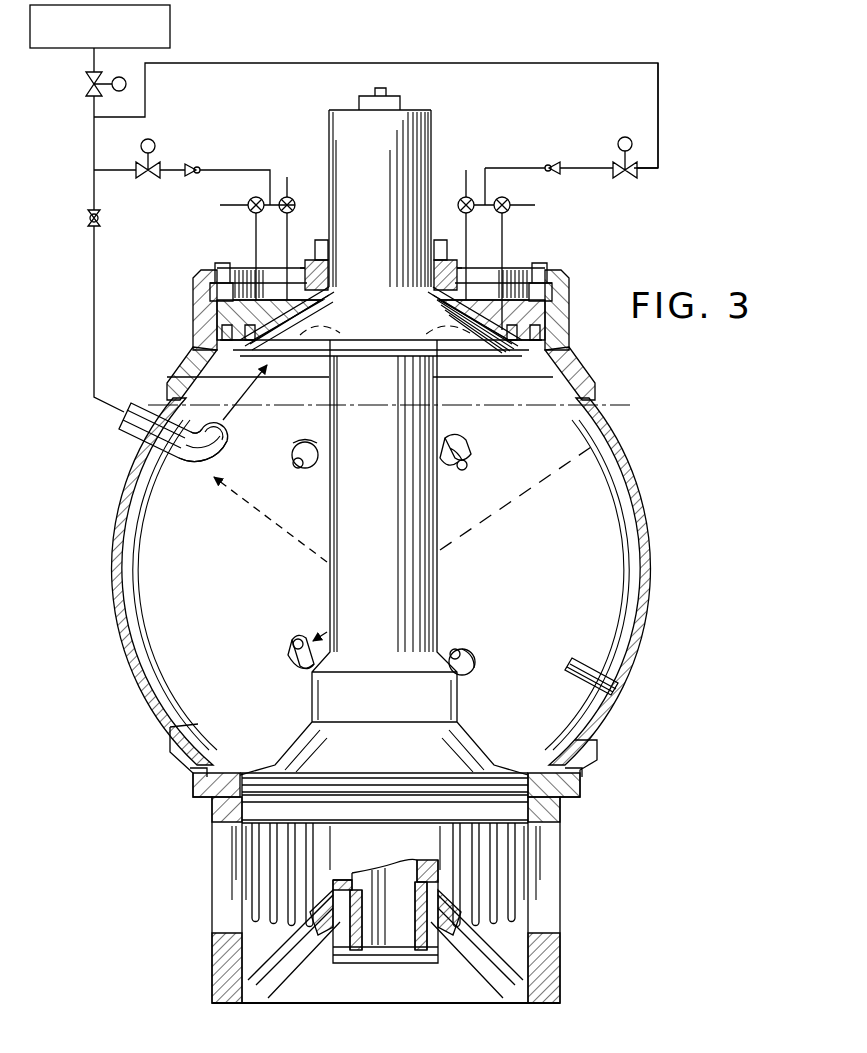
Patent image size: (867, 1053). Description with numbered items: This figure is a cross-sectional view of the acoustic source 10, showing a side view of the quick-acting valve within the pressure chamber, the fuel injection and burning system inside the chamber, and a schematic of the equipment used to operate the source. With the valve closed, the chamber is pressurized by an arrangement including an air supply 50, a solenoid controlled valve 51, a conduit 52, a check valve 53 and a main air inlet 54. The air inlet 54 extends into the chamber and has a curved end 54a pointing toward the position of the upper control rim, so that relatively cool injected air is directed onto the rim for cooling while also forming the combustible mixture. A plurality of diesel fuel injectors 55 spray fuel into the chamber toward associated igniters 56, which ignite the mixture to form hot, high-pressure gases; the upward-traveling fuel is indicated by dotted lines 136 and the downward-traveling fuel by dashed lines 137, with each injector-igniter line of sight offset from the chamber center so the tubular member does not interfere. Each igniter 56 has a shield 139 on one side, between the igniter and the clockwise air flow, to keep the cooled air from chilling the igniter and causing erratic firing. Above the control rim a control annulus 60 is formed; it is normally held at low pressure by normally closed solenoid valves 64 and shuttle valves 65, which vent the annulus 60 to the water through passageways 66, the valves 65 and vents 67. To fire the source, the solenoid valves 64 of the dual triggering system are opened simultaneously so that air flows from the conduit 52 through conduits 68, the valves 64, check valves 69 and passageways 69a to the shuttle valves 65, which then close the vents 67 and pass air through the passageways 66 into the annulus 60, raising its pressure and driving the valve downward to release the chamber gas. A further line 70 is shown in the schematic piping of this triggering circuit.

The apparatus / vessel 10 is at (148, 398).
The air supply 50 is at (100, 27).
The solenoid controlled valve 51 is at (88, 80).
The conduit 52 is at (93, 109).
The check valve 53 is at (91, 216).
The main air inlet 54 is at (132, 405).
The curved end 54a is at (187, 462).
The diesel fuel injectors 55 is at (305, 469).
The igniters 56 is at (470, 462).
The control annulus 60 is at (447, 300).
The solenoid valves 64 is at (153, 167).
The shuttle valves 65 is at (250, 199).
The passageways 66 is at (255, 248).
The vents 67 is at (287, 178).
The conduits 68 is at (104, 172).
The check valves 69 is at (191, 178).
The passageways 69a is at (218, 168).
The conduit 70 is at (518, 167).
The dotted lines 136 is at (290, 536).
The dashed lines 137 is at (490, 521).
The shield 139 is at (470, 438).